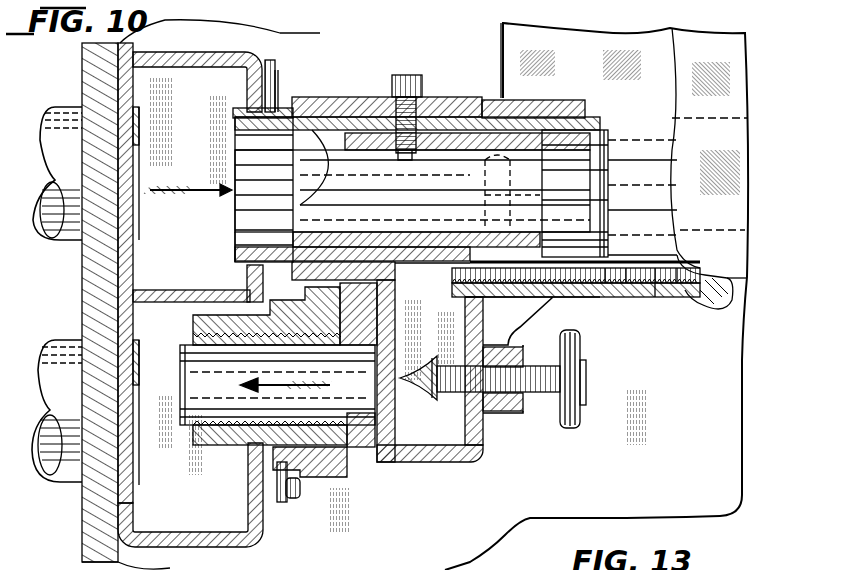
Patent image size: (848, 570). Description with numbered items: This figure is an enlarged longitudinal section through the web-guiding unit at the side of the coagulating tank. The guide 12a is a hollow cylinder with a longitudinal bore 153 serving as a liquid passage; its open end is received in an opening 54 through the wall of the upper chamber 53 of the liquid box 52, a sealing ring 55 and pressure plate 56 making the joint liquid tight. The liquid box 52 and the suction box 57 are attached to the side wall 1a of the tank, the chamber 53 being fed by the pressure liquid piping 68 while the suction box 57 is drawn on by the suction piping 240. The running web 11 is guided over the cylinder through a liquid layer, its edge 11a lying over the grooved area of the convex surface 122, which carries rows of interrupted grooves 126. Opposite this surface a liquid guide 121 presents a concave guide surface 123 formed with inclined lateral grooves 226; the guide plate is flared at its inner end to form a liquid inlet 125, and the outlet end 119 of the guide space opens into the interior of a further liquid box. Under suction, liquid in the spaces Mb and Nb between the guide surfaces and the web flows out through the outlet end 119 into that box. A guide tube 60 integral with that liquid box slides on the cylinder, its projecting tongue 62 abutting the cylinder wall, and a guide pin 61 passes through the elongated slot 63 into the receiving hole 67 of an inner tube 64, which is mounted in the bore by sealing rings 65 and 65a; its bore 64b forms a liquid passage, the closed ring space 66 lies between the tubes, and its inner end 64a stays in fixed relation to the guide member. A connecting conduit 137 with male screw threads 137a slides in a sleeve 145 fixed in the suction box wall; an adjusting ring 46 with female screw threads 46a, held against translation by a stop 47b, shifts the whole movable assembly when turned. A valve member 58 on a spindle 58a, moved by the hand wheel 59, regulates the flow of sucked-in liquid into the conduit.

The side wall of the tank 1a is at (84, 62).
The pressure liquid piping 68 is at (50, 108).
The suction piping 240 is at (72, 486).
The liquid box 52 is at (204, 56).
The upper chamber 53 is at (158, 72).
The suction box 57 is at (230, 532).
The opening 54 is at (253, 107).
The sealing ring 55 is at (272, 110).
The pressure plate 56 is at (270, 66).
The guide tube 60 is at (330, 100).
The projecting tongue 62 is at (558, 102).
The guide pin 61 is at (408, 80).
The elongated slot 63 is at (470, 117).
The inner tube 64 is at (428, 140).
The bore of the inner tube 64b is at (447, 199).
The closed ring space 66 is at (338, 250).
The sealing ring 65 is at (302, 168).
The receiving hole 67 is at (405, 160).
The sealing ring 65a is at (547, 150).
The inner end of the inner tube 64a is at (545, 215).
The longitudinal bore 153 is at (600, 150).
The guide 12a is at (662, 143).
The web 11 is at (573, 35).
The edge of the running web 11a is at (500, 32).
The lateral grooves 226 is at (708, 305).
The liquid inlet 125 is at (738, 290).
The interrupted grooves 126 is at (587, 266).
The outlet end 119 is at (455, 280).
The space Mb is at (628, 272).
The convex surface 122 is at (655, 272).
The space Nb is at (603, 296).
The liquid guide 121 is at (677, 296).
The concave guide surface 123 is at (655, 297).
The valve member 58 is at (440, 395).
The spindle 58a is at (537, 395).
The hand wheel 59 is at (568, 428).
The female screw threads 46a is at (345, 333).
The connecting conduit 137 is at (352, 345).
The male screw threads 137a is at (358, 417).
The sleeve 145 is at (230, 440).
The adjusting ring 46 is at (340, 458).
The stop 47b is at (267, 505).